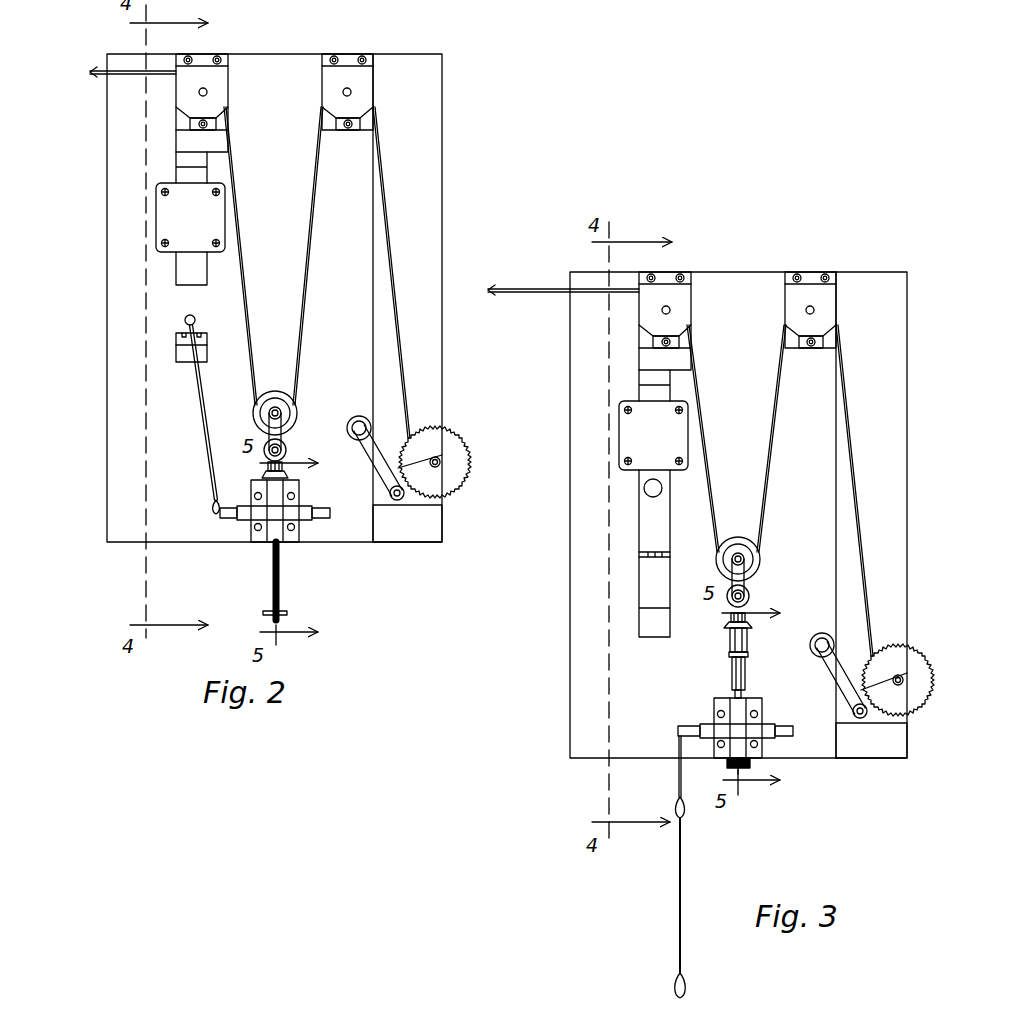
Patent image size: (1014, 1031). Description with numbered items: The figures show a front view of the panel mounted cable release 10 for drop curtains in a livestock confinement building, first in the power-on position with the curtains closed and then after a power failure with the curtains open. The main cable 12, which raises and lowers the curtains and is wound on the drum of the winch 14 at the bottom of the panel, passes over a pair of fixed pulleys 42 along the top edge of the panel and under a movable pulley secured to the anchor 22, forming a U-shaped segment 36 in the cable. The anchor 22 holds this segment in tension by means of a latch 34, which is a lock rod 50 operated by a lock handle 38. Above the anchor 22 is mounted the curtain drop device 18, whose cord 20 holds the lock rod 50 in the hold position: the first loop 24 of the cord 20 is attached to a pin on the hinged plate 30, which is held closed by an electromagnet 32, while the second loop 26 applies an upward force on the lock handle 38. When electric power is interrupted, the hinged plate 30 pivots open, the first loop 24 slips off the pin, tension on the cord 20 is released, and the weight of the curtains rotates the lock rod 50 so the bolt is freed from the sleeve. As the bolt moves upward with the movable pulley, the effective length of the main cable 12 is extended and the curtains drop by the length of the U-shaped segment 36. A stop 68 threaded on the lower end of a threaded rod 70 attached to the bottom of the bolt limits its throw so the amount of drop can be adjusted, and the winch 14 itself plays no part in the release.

In FIG. 2, the cable release 10 is at (336, 282).
In FIG. 3, the cable release 10 is at (790, 480).
In FIG. 2, the main cable 12 is at (123, 70).
In FIG. 3, the main cable 12 is at (523, 288).
In FIG. 2, the winch 14 is at (461, 433).
In FIG. 3, the winch 14 is at (872, 695).
In FIG. 2, the curtain drop device 18 is at (155, 227).
In FIG. 3, the curtain drop device 18 is at (617, 448).
In FIG. 2, the cord 20 is at (197, 390).
In FIG. 3, the cord 20 is at (680, 895).
In FIG. 2, the anchor 22 is at (267, 529).
In FIG. 3, the anchor 22 is at (667, 719).
In FIG. 2, the first loop 24 is at (184, 333).
In FIG. 2, the second loop 26 is at (217, 507).
In FIG. 3, the hinged plate 30 is at (652, 580).
In FIG. 3, the electromagnet 32 is at (640, 498).
In FIG. 2, the latch 34 is at (232, 519).
In FIG. 3, the latch 34 is at (663, 742).
In FIG. 2, the U-shaped segment of cable 36 is at (310, 242).
In FIG. 3, the U-shaped segment of cable 36 is at (773, 432).
In FIG. 3, the lock handle 38 is at (678, 780).
In FIG. 2, the fixed pulleys 42 is at (230, 95).
In FIG. 3, the fixed pulleys 42 is at (737, 321).
In FIG. 2, the lock rod 50 is at (224, 512).
In FIG. 3, the lock rod 50 is at (688, 723).
In FIG. 2, the stop 68 is at (288, 613).
In FIG. 3, the stop 68 is at (750, 762).
In FIG. 2, the threaded rod 70 is at (281, 572).